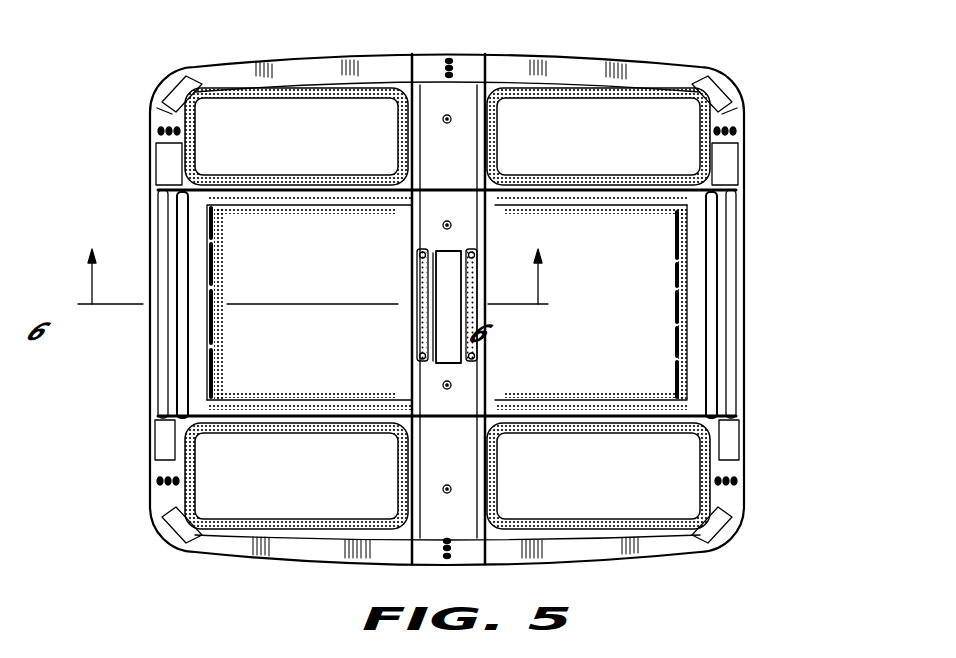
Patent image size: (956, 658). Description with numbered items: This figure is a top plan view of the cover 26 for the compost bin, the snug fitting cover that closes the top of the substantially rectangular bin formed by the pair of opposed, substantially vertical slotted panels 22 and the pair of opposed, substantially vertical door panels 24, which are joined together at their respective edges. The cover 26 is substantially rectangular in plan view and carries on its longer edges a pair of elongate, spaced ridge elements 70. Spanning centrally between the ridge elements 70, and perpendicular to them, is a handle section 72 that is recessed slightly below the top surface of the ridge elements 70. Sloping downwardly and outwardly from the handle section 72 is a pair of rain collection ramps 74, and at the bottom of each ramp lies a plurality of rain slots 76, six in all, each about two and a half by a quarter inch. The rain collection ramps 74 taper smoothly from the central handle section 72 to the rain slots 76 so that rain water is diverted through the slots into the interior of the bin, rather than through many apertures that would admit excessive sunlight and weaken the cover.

The slotted panel 22 is at (365, 55).
The door panel 24 is at (157, 150).
The cover 26 is at (197, 462).
The ridge element 70 is at (592, 106).
The handle section 72 is at (459, 92).
The rain collection ramp 74 is at (235, 340).
The rain slot 76 is at (212, 288).